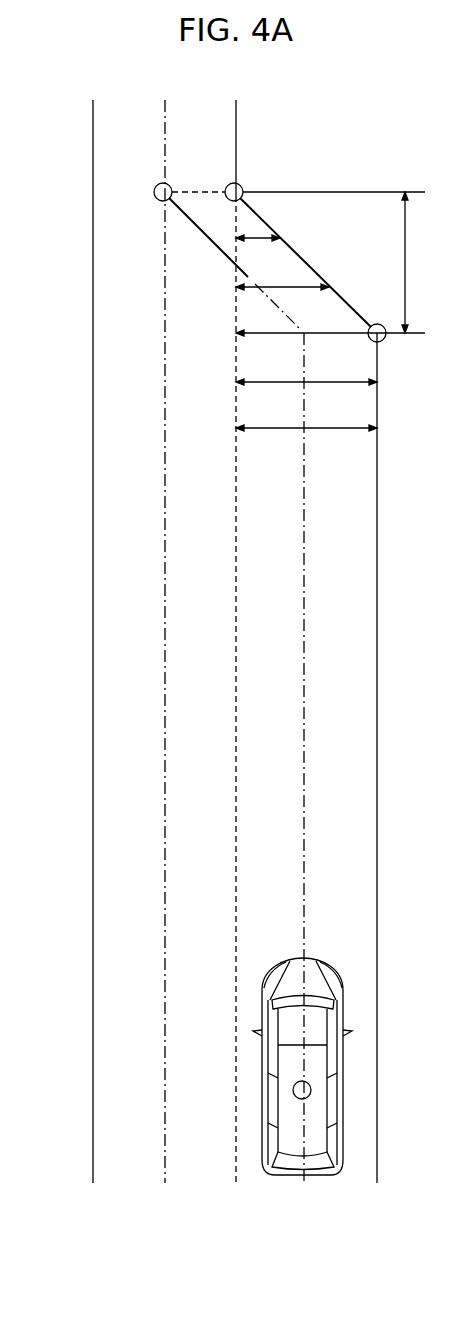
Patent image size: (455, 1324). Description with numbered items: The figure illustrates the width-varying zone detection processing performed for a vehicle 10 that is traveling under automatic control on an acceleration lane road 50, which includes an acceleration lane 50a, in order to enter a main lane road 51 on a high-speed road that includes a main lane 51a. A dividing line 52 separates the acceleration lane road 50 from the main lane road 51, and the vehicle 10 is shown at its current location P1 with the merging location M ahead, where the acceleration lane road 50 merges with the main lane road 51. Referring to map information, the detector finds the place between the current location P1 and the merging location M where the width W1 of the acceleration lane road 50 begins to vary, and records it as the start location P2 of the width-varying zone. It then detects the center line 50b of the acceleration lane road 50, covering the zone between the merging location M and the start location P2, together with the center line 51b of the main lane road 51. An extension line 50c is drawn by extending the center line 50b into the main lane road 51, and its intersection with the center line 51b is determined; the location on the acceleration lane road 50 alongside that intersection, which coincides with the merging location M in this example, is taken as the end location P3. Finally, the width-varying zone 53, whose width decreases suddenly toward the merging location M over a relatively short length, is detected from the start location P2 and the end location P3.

The vehicle 10 is at (330, 1137).
The current location P1 is at (311, 1083).
The start location of the width-varying zone P2 is at (384, 340).
The end location of the width-varying zone P3 is at (241, 190).
The merging location M is at (155, 187).
The acceleration lane road 50 is at (358, 928).
The acceleration lane 50a is at (367, 816).
The center line of the acceleration lane road 50b is at (305, 575).
The extension line 50c is at (197, 237).
The main lane road 51 is at (120, 978).
The main lane 51a is at (102, 816).
The center line of the main lane road 51b is at (164, 477).
The dividing line 52 is at (234, 735).
The width-varying zone 53 is at (345, 573).
The width of the acceleration lane road W1 is at (306, 442).